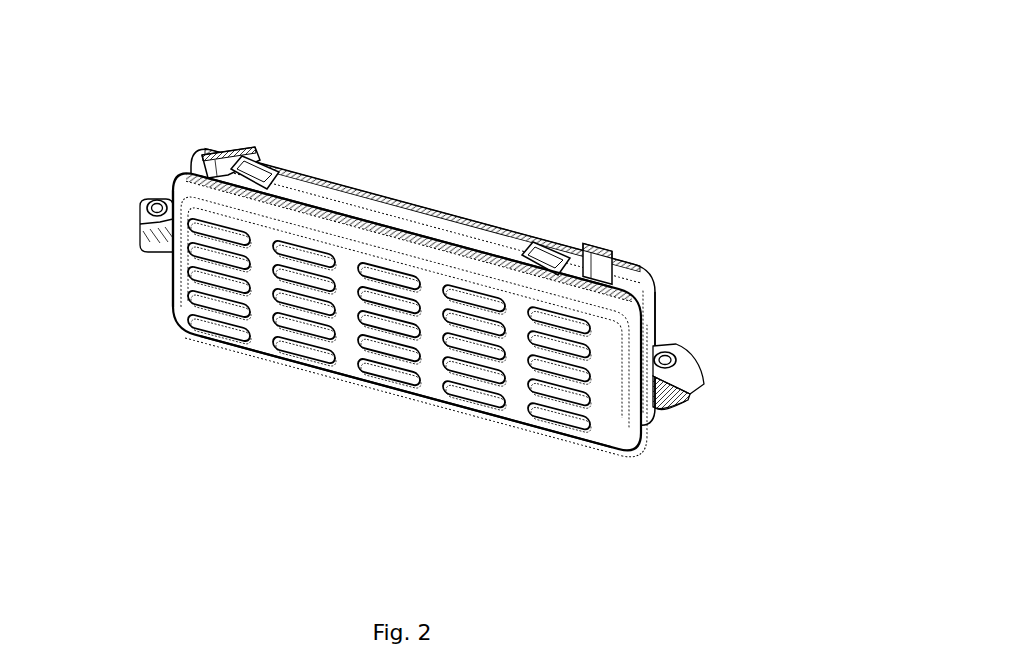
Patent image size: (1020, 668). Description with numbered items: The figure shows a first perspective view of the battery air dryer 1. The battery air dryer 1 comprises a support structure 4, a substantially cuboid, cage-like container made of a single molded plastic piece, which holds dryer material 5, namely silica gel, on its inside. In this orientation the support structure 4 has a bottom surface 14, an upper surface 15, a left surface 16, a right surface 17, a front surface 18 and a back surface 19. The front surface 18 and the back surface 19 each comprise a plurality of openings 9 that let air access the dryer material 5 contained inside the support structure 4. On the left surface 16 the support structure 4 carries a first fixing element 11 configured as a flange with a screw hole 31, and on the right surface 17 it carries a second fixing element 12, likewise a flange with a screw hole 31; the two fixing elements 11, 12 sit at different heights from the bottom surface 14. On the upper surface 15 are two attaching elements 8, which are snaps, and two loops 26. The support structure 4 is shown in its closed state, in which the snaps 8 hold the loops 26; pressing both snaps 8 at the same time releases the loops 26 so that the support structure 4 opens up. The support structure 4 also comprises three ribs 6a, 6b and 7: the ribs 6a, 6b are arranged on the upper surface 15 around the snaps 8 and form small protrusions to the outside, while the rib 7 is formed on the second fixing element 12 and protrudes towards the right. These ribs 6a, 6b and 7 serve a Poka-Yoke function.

The battery air dryer 1 is at (684, 44).
The support structure 4 is at (317, 193).
The dryer material 5 is at (355, 332).
The rib 6a is at (225, 157).
The rib 6b is at (604, 244).
The rib 7 is at (688, 380).
The attaching element 8 is at (275, 186).
The opening 9 is at (416, 364).
The first fixing element 11 is at (148, 245).
The second fixing element 12 is at (674, 401).
The bottom surface 14 is at (544, 441).
The upper surface 15 is at (433, 228).
The left surface 16 is at (162, 276).
The right surface 17 is at (660, 312).
The front surface 18 is at (520, 372).
The back surface 19 is at (493, 193).
The loop 26 is at (306, 193).
The screw hole 31 is at (158, 200).